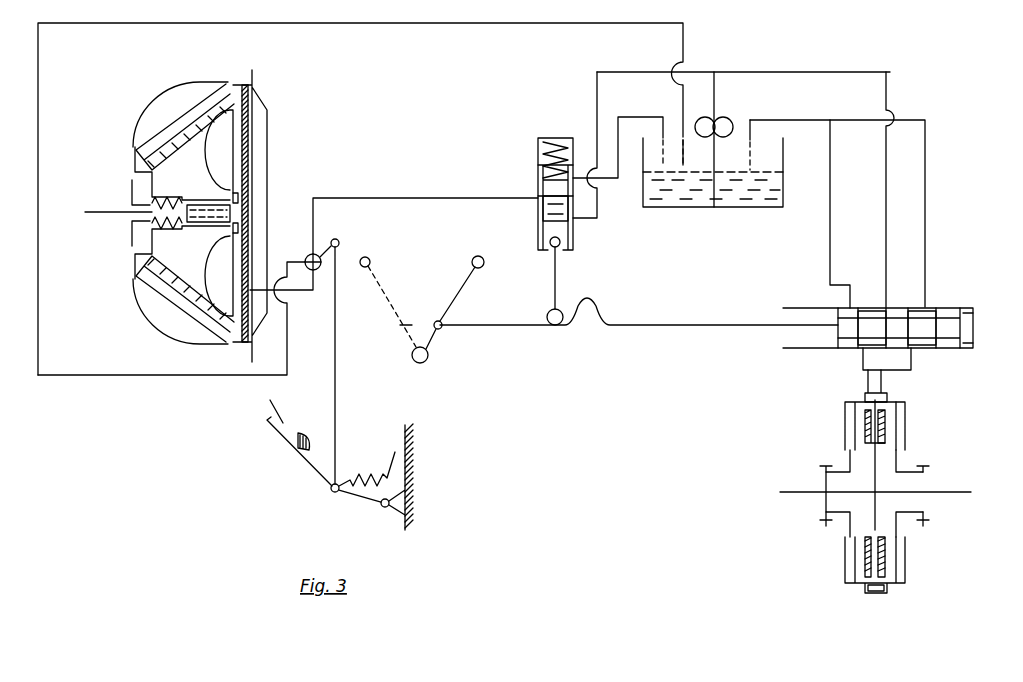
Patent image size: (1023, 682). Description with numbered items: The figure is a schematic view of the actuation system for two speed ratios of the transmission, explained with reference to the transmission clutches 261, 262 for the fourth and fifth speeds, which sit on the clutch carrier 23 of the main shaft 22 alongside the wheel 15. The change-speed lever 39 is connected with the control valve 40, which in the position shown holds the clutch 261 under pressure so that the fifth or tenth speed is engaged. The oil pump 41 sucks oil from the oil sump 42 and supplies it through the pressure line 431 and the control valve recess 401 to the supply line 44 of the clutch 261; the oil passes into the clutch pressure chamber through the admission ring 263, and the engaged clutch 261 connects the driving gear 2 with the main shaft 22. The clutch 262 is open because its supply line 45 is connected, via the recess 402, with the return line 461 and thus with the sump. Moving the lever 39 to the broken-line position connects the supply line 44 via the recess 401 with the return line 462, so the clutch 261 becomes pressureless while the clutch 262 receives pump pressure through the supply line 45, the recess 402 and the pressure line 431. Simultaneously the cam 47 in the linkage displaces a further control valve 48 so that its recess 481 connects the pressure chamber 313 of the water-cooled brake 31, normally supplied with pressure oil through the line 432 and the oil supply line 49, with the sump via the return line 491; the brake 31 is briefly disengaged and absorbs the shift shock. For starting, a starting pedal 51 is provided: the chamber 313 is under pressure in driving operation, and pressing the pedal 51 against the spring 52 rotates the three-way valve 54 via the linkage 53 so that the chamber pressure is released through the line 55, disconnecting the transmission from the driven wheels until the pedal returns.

The line 55 is at (295, 23).
The water-cooled brake 31 is at (227, 137).
The pressure chamber 313 is at (250, 157).
The three-way valve 54 is at (306, 256).
The oil supply line 49 is at (390, 198).
The control valve 48 is at (552, 180).
The recess 481 is at (540, 208).
The line 432 is at (597, 90).
The return line 491 is at (632, 103).
The oil pump 41 is at (726, 122).
The oil sump 42 is at (688, 192).
The pressure line 431 is at (885, 160).
The return line 461 is at (928, 163).
The return line 462 is at (828, 242).
The cam 47 is at (602, 317).
The change-speed lever 39 is at (452, 305).
The control valve 40 is at (810, 325).
The control valve recess 401 is at (873, 312).
The recess 402 is at (928, 312).
The supply line 44 is at (863, 363).
The supply line 45 is at (913, 363).
The transmission clutch 261 is at (853, 422).
The transmission clutch 262 is at (896, 422).
The admission ring 263 is at (873, 595).
The clutch carrier 23 is at (873, 463).
The input gear wheel 2 is at (826, 520).
The main shaft 22 is at (943, 495).
The wheel 15 is at (921, 528).
The linkage 53 is at (337, 357).
The starting pedal 51 is at (282, 437).
The spring 52 is at (393, 453).